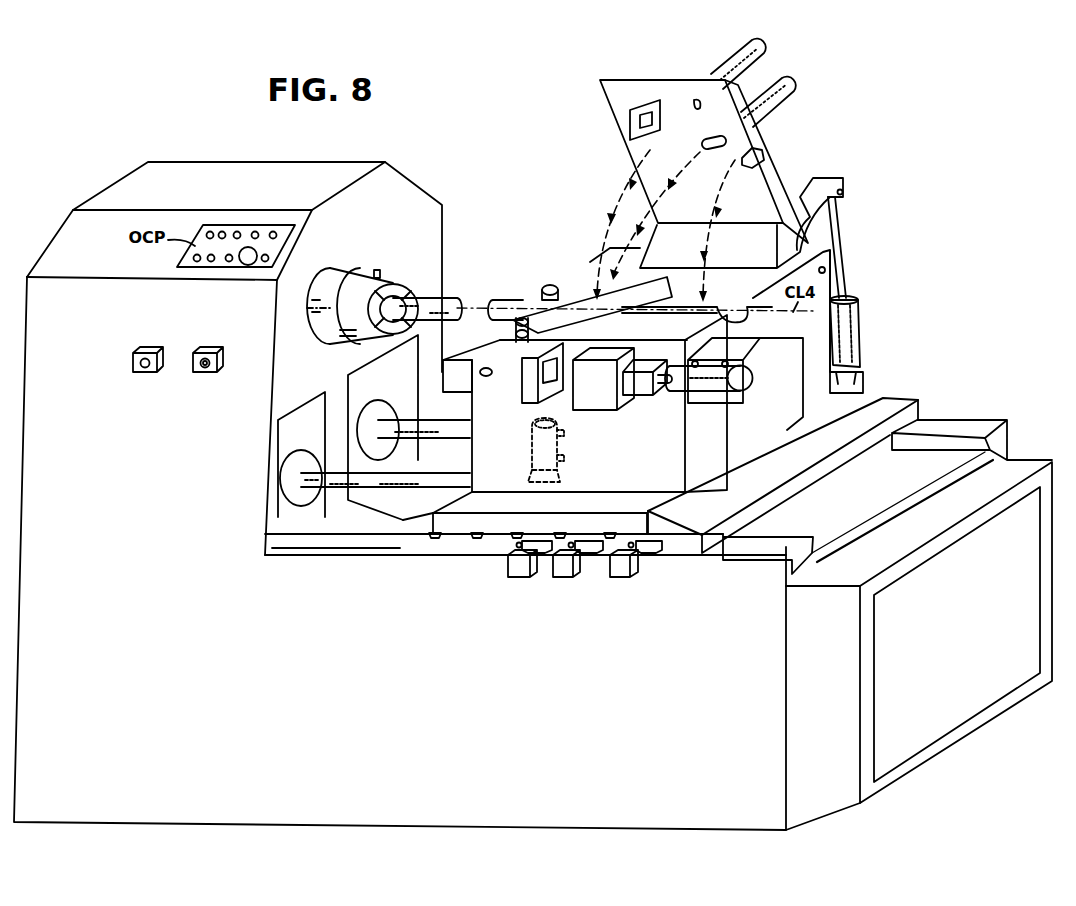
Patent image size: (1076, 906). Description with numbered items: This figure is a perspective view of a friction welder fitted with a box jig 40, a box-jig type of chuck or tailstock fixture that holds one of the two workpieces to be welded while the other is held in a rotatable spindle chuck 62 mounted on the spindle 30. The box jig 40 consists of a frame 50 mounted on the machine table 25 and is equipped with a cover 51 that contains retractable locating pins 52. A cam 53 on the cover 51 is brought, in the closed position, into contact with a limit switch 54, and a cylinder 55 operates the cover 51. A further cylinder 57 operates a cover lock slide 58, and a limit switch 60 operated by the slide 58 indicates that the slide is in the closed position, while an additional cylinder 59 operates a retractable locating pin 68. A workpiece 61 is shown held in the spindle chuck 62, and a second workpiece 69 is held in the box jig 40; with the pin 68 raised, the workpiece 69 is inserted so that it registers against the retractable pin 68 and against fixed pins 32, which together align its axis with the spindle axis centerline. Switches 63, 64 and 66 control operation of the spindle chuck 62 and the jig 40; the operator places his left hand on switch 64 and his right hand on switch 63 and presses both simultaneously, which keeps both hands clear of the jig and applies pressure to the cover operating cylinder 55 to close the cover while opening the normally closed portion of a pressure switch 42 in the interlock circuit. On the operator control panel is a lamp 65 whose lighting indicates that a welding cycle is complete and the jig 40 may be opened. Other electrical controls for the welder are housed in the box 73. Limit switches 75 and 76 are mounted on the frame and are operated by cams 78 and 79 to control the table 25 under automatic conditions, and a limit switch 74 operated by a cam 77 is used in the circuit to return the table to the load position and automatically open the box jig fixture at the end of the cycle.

The machine table 25 is at (908, 412).
The spindle 30 is at (376, 280).
The fixed pins 32 is at (530, 317).
The box jig 40 is at (857, 219).
The pressure switch 42 is at (705, 142).
The frame 50 is at (827, 278).
The cover 51 is at (755, 137).
The retractable locating pins 52 is at (773, 70).
The cam 53 is at (764, 158).
The limit switch 54 is at (733, 343).
The cylinder 55 is at (855, 320).
The cylinder 57 is at (747, 377).
The cover lock slide 58 is at (637, 387).
The additional cylinder 59 is at (553, 450).
The limit switch 60 is at (478, 378).
The workpiece 61 is at (448, 297).
The spindle chuck 62 is at (402, 292).
The switch 63 is at (210, 368).
The switch 64 is at (150, 368).
The lamp 65 is at (267, 262).
The switch 66 is at (253, 230).
The retractable locating pin 68 is at (553, 278).
The workpiece 69 is at (507, 300).
The box 73 is at (1010, 690).
The limit switch 74 is at (513, 570).
The limit switch 75 is at (565, 570).
The limit switch 76 is at (620, 570).
The cam 77 is at (545, 550).
The cam 78 is at (643, 550).
The cam 79 is at (587, 550).